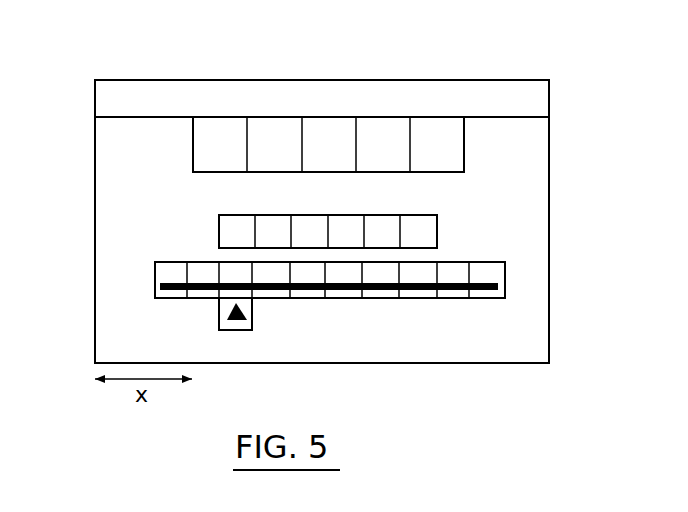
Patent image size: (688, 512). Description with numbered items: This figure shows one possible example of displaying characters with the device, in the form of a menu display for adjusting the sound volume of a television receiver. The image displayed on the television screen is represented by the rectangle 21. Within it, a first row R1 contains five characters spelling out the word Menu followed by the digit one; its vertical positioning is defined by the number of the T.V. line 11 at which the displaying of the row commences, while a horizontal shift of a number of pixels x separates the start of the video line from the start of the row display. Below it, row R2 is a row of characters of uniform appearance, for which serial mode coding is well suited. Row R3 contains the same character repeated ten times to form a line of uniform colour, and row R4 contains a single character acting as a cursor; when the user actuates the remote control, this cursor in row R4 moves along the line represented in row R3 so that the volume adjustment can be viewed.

The T.V. line 11 is at (140, 116).
The rectangle 21 is at (500, 80).
The row R1 is at (464, 145).
The row R2 is at (437, 233).
The row R3 is at (505, 282).
The row R4 is at (253, 320).